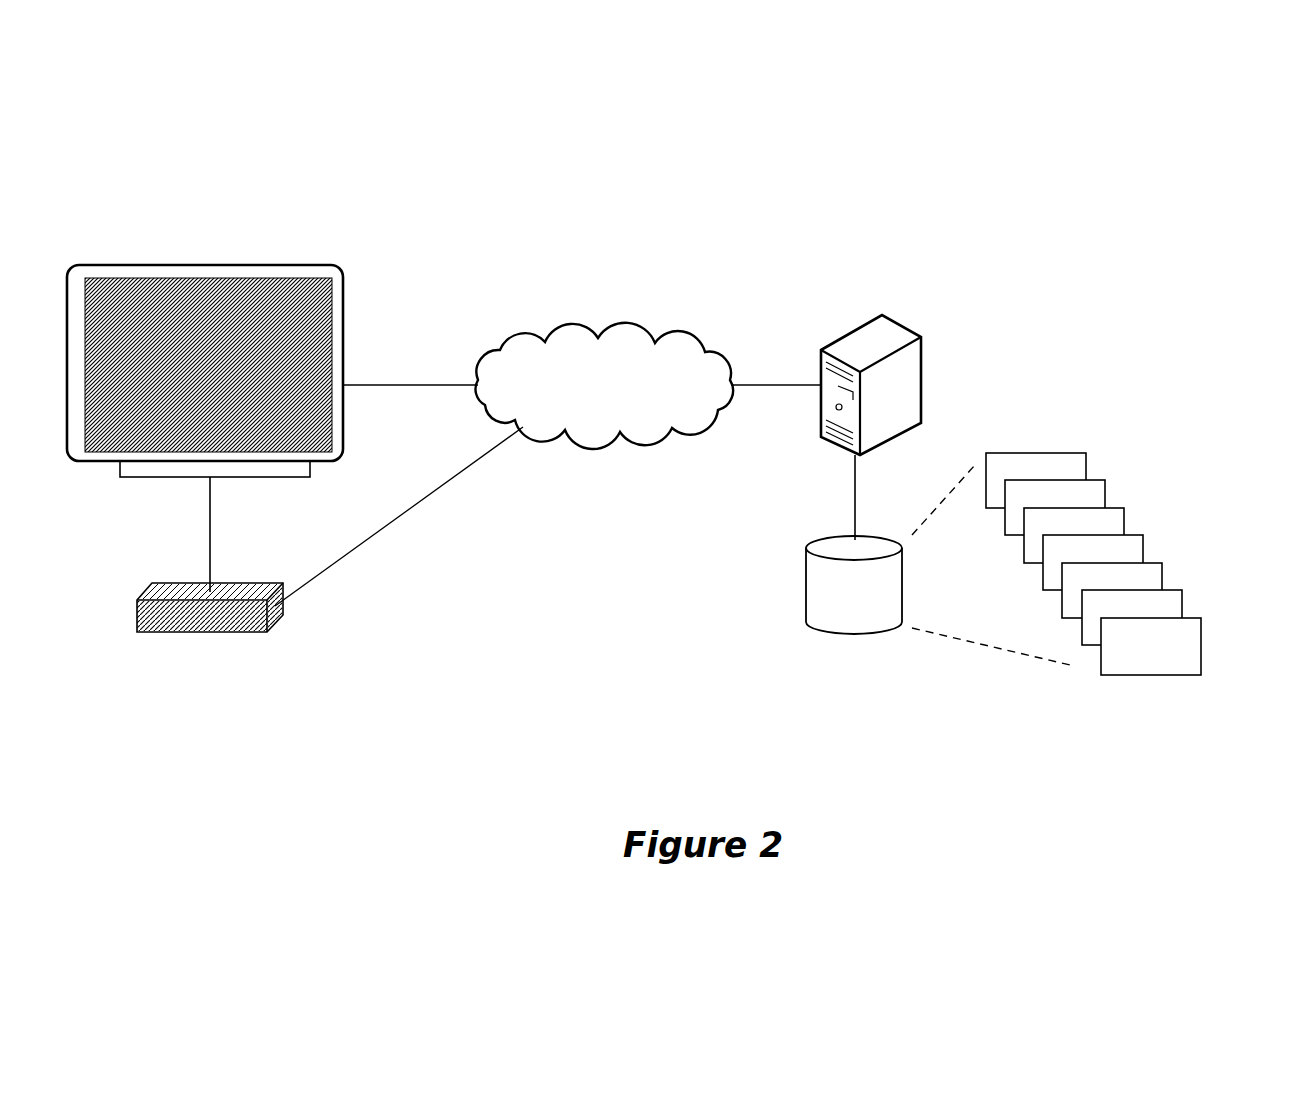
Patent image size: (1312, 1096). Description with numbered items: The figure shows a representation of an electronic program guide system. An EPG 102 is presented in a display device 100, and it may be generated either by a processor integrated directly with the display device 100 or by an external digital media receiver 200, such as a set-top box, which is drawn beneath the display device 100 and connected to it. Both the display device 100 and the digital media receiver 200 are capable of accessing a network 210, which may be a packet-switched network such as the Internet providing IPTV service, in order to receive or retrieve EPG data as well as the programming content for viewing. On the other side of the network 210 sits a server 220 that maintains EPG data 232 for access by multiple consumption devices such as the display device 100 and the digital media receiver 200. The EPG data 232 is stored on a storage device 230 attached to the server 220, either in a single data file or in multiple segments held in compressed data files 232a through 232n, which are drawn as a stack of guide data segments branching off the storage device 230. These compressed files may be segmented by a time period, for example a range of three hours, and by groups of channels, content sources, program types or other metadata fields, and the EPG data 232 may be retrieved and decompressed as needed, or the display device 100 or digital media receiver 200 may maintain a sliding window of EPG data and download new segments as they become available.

The display device 100 is at (340, 272).
The EPG 102 is at (328, 328).
The digital media receiver 200 is at (242, 585).
The network 210 is at (608, 338).
The server 220 is at (905, 333).
The storage device 230 is at (902, 585).
The EPG data 232 is at (1140, 534).
The compressed data file 232a is at (1086, 478).
The compressed data file 232n is at (1201, 652).